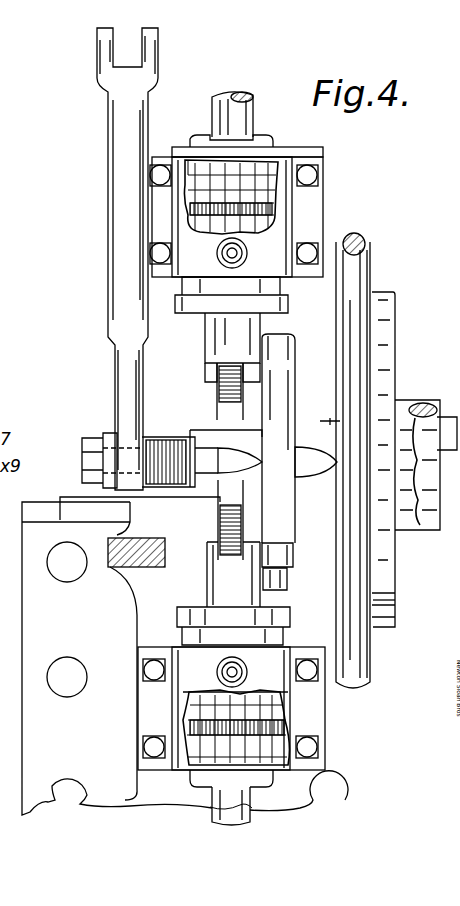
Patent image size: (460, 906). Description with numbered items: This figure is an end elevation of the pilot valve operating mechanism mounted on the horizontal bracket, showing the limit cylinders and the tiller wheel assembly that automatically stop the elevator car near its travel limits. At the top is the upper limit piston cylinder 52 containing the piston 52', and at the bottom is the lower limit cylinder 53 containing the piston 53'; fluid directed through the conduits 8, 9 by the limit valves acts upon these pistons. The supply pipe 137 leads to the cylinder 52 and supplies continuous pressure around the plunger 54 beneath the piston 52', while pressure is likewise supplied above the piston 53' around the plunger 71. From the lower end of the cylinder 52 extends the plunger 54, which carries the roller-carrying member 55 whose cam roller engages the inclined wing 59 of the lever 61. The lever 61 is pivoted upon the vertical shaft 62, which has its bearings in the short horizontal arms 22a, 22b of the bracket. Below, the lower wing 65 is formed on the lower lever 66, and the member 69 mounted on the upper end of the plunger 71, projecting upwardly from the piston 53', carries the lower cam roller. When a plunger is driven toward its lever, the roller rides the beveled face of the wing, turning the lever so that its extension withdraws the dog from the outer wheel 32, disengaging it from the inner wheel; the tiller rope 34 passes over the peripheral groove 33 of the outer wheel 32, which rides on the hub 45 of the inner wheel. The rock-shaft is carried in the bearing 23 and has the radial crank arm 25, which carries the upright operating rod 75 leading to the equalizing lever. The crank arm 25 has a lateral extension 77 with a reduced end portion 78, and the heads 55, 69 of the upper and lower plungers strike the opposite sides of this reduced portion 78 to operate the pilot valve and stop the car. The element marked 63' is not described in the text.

The conduit 8 is at (250, 97).
The conduit 9 is at (255, 816).
The short horizontal arm 22a is at (290, 352).
The short horizontal arm 22b is at (286, 562).
The bearing 23 is at (102, 500).
The radial arm 25 is at (100, 448).
The outer wheel 32 is at (322, 500).
The peripheral groove 33 is at (374, 262).
The tiller rope 34 is at (364, 240).
The hub 45 is at (432, 417).
The piston cylinder 52 is at (265, 224).
The piston 52' is at (270, 181).
The cylinder 53 is at (285, 717).
The piston 53' is at (308, 727).
The plunger 54 is at (205, 345).
The roller-carrying member 55 is at (205, 372).
The inclined wing 59 is at (218, 402).
The lever 61 is at (262, 414).
The vertical shaft 62 is at (280, 590).
The lower bearing cover 63' is at (188, 708).
The lower wing 65 is at (225, 548).
The lower lever 66 is at (322, 520).
The member 69 is at (135, 570).
The plunger 71 is at (212, 590).
The upright operating rod 75 is at (108, 185).
The lateral extension 77 is at (180, 487).
The reduced end portion 78 is at (205, 475).
The supply pipe 137 is at (248, 248).